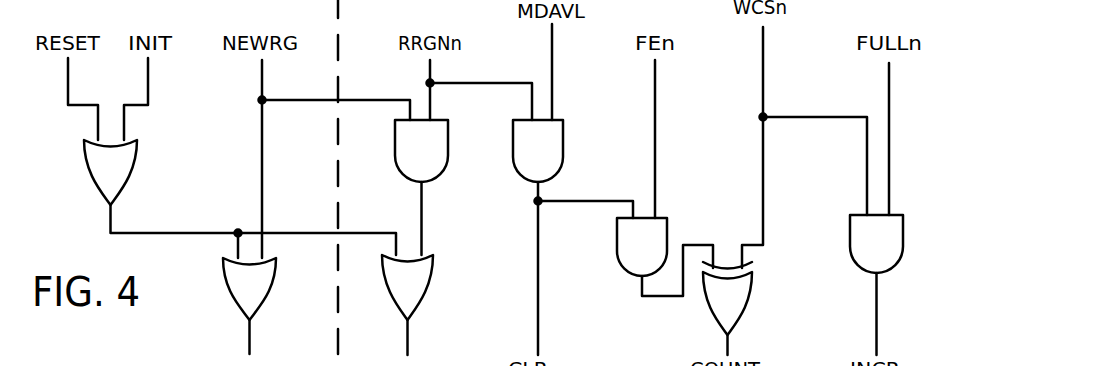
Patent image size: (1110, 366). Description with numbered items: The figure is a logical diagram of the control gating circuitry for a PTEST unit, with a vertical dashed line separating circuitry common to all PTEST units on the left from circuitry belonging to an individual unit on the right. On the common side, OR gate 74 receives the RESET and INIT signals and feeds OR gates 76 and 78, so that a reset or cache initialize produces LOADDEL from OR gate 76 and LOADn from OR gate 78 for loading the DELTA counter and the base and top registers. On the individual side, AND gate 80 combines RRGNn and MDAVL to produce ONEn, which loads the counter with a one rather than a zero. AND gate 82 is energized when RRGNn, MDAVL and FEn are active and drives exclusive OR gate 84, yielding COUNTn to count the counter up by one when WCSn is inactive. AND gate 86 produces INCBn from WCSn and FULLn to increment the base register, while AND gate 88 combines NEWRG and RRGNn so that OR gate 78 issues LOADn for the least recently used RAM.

The OR gate 74 is at (137, 163).
The OR gate 76 is at (223, 289).
The OR gate 78 is at (432, 290).
The AND gate 80 is at (563, 163).
The AND gate 82 is at (667, 230).
The exclusive OR gate 84 is at (752, 292).
The AND gate 86 is at (850, 245).
The AND gate 88 is at (448, 160).